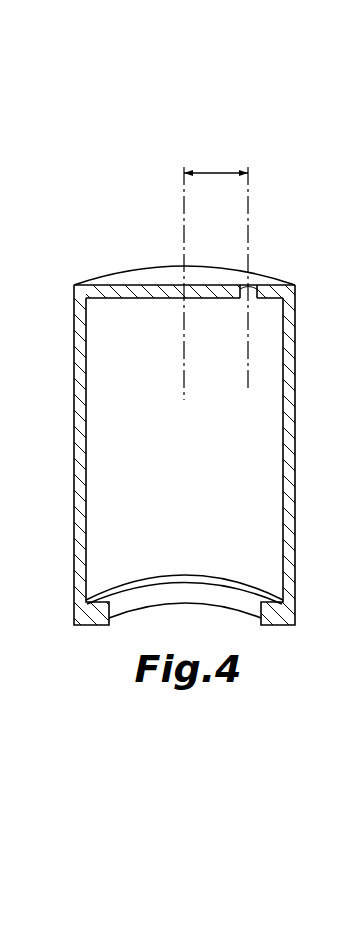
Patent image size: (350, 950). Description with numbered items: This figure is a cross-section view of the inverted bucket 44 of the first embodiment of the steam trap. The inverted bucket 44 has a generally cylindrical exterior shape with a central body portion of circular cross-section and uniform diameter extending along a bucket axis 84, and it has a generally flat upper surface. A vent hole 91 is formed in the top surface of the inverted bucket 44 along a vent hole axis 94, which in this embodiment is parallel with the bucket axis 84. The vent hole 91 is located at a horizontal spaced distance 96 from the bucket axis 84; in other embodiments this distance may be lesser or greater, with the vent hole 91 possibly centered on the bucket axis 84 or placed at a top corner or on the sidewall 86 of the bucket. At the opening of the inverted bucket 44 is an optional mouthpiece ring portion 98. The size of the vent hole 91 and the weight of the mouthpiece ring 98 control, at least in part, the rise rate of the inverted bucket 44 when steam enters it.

The inverted bucket 44 is at (99, 268).
The bucket axis 84 is at (183, 227).
The cap side wall 86 is at (80, 425).
The vent hole 91 is at (250, 284).
The vent hole axis 94 is at (250, 232).
The horizontal spaced distance 96 is at (215, 172).
The mouthpiece ring portion 98 is at (93, 625).